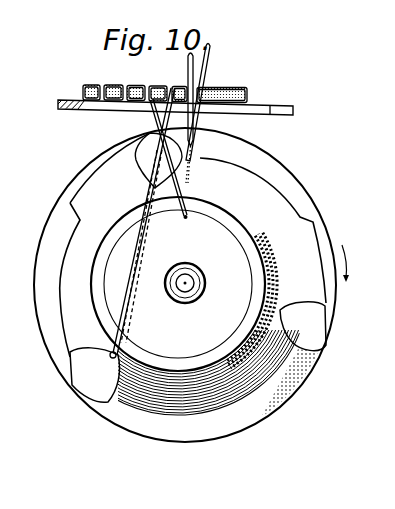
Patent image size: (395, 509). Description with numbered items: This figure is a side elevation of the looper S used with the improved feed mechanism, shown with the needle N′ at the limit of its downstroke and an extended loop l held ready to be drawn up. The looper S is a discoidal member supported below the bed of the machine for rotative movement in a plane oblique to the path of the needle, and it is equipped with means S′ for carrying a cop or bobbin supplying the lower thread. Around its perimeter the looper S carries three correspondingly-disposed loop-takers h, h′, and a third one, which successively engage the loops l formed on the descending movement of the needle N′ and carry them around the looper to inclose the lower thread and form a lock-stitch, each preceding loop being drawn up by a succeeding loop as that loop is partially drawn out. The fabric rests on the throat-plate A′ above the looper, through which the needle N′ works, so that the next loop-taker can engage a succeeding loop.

The looper S is at (302, 203).
The means for carrying a cop or bobbin S′ is at (186, 281).
The frame bar A′ is at (277, 105).
The needle N′ is at (200, 72).
The loop-taker h is at (158, 160).
The loop-taker h′ is at (95, 375).
The loop l is at (68, 378).